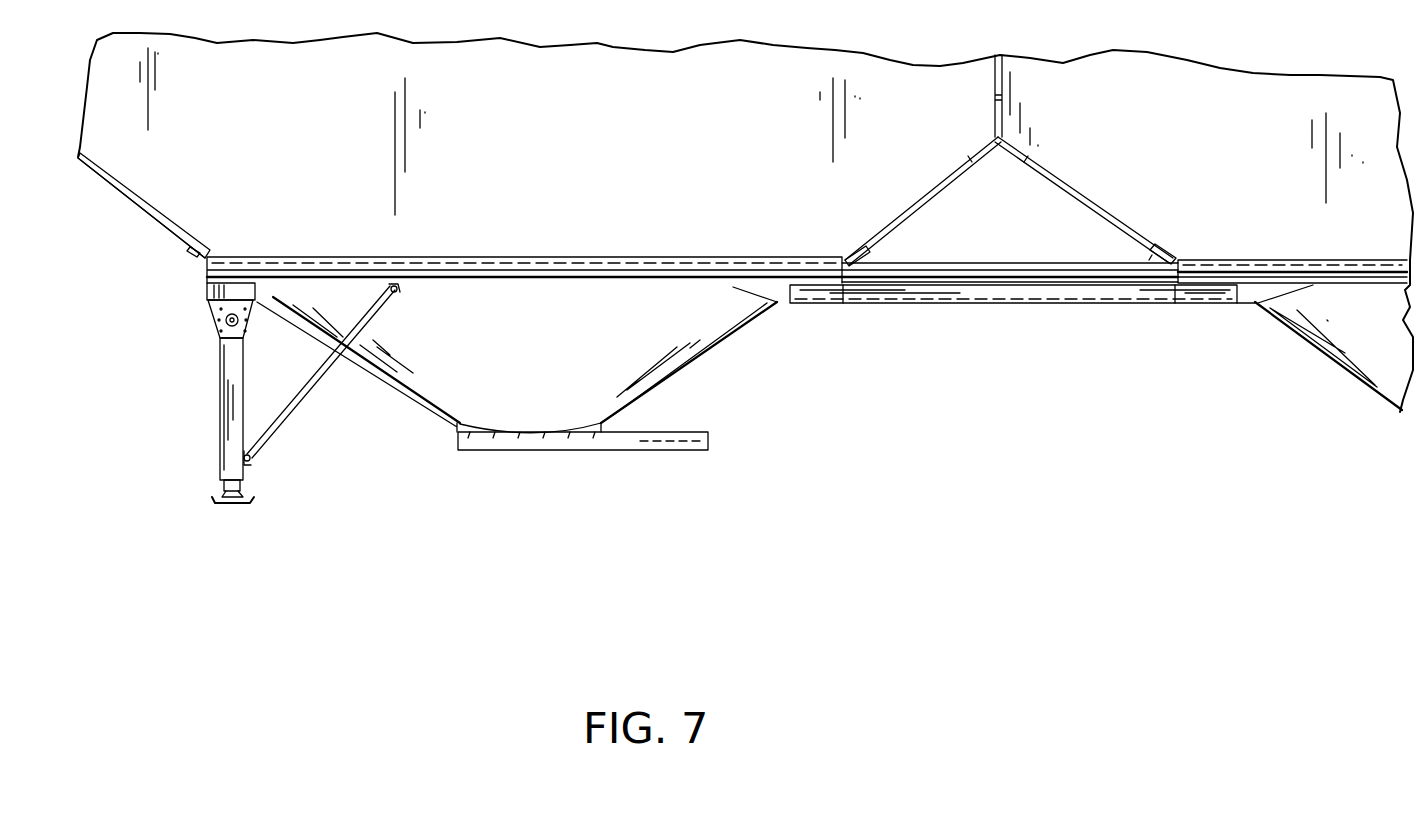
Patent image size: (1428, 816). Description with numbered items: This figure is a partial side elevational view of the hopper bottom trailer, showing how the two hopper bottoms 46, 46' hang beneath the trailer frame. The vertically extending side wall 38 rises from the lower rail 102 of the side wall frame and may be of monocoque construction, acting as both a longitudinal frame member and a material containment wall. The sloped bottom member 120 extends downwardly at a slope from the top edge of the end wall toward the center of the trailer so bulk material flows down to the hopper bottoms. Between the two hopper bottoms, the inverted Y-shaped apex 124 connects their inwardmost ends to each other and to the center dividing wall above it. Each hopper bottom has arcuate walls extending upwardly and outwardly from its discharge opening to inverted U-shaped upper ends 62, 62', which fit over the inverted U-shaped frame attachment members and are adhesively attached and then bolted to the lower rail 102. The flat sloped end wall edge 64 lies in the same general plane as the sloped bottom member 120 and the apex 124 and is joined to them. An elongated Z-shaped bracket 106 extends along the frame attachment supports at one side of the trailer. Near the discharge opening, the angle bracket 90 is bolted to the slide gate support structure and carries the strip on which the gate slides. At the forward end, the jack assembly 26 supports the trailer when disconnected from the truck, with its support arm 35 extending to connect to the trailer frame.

The side wall 38 is at (680, 121).
The sloped bottom member 120 is at (137, 195).
The inverted U-shaped upper end 62 is at (524, 230).
The lower rail 102 is at (625, 262).
The end wall edge 64 is at (866, 260).
The inverted Y-shaped apex 124 is at (1003, 118).
The inverted U-shaped upper end 62' is at (1292, 231).
The Z-shaped bracket 106 is at (203, 290).
The support arm 35 is at (300, 390).
The jack assembly 26 is at (222, 402).
The hopper bottom 46 is at (517, 396).
The angle bracket 90 is at (680, 433).
The hopper bottom 46' is at (1319, 372).